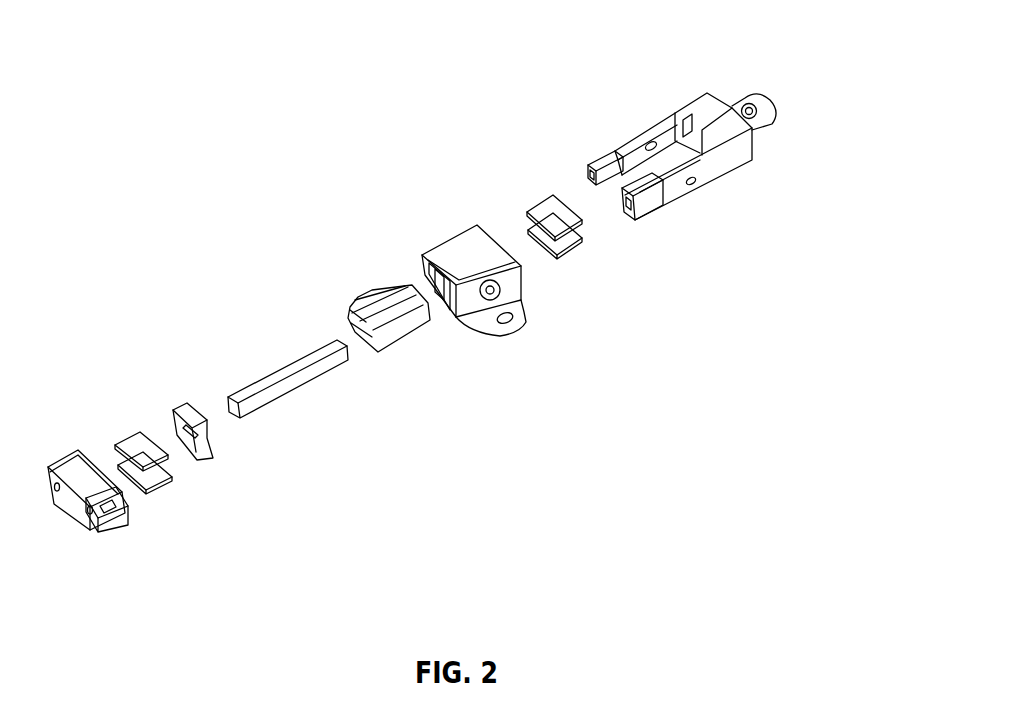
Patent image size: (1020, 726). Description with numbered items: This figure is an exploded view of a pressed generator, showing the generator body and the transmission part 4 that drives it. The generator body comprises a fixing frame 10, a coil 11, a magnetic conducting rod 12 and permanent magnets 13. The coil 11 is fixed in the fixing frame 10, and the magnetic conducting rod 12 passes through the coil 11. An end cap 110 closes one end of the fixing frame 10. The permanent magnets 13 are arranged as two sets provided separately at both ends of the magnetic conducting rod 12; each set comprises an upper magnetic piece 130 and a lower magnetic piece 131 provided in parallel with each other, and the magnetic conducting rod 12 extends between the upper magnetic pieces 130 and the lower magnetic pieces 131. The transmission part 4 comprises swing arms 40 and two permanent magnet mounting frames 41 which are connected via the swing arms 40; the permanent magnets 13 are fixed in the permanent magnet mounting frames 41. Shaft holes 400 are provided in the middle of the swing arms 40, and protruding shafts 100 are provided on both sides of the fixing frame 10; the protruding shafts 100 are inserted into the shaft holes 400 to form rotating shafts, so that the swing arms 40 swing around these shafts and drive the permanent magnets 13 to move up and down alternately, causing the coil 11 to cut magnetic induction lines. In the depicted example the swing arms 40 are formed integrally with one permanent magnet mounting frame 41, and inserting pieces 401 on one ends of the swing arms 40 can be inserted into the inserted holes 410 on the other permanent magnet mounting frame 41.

The transmission part 4 is at (750, 102).
The permanent magnet mounting frame 41 is at (740, 162).
The inserting piece 401 is at (626, 192).
The shaft hole 400 is at (693, 182).
The swing arm 40 is at (673, 199).
The permanent magnet 13 is at (454, 390).
The upper magnetic piece 130 is at (575, 223).
The lower magnetic piece 131 is at (578, 254).
The fixing frame 10 is at (542, 320).
The protruding shaft 100 is at (501, 298).
The coil 11 is at (410, 346).
The magnetic conducting rod 12 is at (299, 390).
The end cap 110 is at (216, 464).
The inserted hole 410 is at (56, 489).